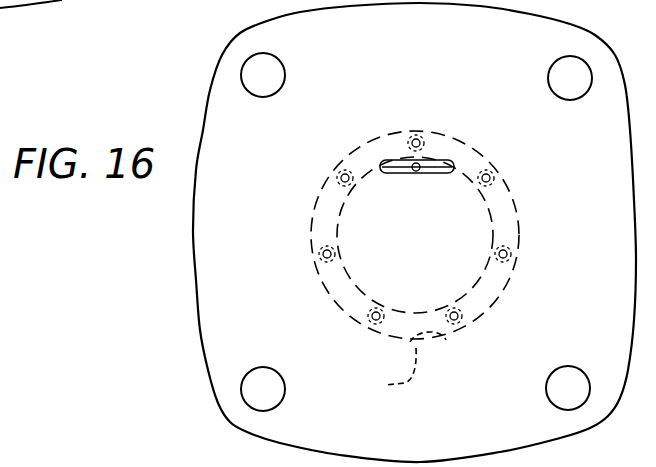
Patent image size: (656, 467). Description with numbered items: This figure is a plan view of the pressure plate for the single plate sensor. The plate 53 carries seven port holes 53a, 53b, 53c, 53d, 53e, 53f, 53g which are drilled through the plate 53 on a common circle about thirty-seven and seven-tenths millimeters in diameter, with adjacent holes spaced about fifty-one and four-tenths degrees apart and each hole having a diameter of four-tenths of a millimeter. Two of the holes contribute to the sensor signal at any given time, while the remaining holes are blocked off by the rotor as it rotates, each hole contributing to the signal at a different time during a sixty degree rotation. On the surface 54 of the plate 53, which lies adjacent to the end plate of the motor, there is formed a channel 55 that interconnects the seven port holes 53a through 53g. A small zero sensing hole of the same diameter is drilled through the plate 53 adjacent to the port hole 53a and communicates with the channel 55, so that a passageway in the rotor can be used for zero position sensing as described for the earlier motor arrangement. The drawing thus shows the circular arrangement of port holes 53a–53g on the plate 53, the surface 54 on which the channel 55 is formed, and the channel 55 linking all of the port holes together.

The plate 53 is at (218, 283).
The surface 54 is at (217, 234).
The port hole 53a is at (422, 105).
The port hole 53b is at (491, 173).
The port hole 53c is at (508, 254).
The port hole 53d is at (458, 322).
The port hole 53e is at (372, 322).
The port hole 53f is at (321, 257).
The port hole 53g is at (341, 175).
The channel 55 is at (395, 362).